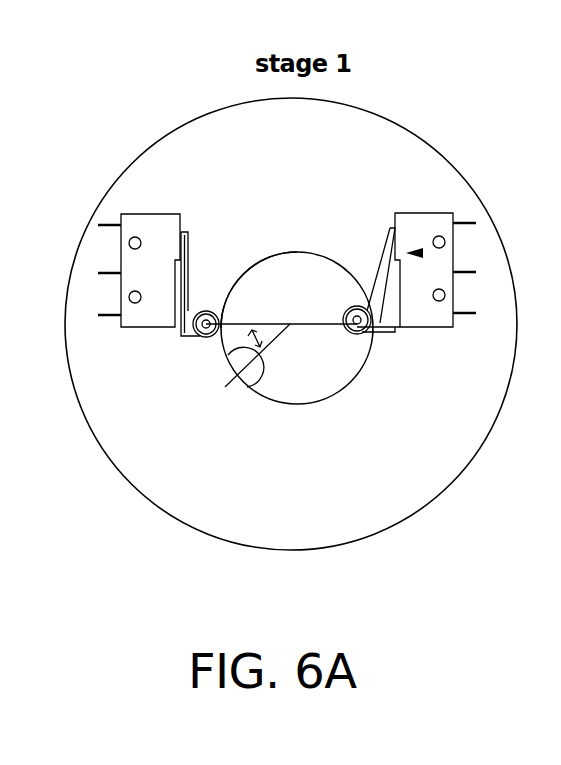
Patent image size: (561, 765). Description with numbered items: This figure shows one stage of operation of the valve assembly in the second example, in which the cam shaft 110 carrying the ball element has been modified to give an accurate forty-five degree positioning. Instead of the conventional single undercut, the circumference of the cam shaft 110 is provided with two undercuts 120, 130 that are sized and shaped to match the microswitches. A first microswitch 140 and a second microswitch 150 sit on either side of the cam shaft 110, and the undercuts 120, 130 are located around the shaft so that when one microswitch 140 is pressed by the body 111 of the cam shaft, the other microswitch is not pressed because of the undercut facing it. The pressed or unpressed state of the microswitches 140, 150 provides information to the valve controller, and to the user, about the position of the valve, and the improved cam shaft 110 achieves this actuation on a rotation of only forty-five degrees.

The cam shaft 110 is at (353, 377).
The body of the cam shaft 111 is at (260, 260).
The undercut 120 is at (245, 383).
The undercut 130 is at (372, 338).
The first microswitch 140 is at (198, 336).
The second microswitch 150 is at (353, 307).